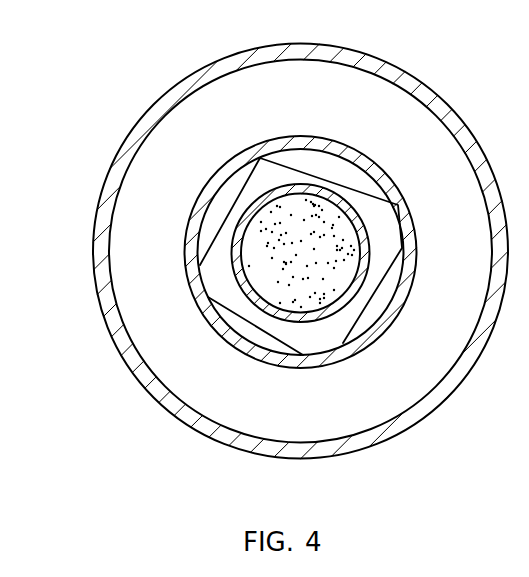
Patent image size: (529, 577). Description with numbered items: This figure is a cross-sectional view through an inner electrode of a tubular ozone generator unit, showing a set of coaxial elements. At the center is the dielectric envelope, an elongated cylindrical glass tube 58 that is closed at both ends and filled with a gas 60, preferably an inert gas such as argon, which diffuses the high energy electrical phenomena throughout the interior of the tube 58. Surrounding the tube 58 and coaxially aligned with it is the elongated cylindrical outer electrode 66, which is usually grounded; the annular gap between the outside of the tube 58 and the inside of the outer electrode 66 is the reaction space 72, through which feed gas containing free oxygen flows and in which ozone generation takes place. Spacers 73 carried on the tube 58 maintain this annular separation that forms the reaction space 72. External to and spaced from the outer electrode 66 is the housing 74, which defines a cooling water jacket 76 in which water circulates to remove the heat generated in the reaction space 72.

The housing 74 is at (243, 47).
The cooling water jacket 76 is at (162, 170).
The spacers 73 is at (268, 172).
The reaction space 72 is at (203, 228).
The outer electrode 66 is at (217, 217).
The glass tube 58 is at (240, 282).
The gas 60 is at (301, 275).